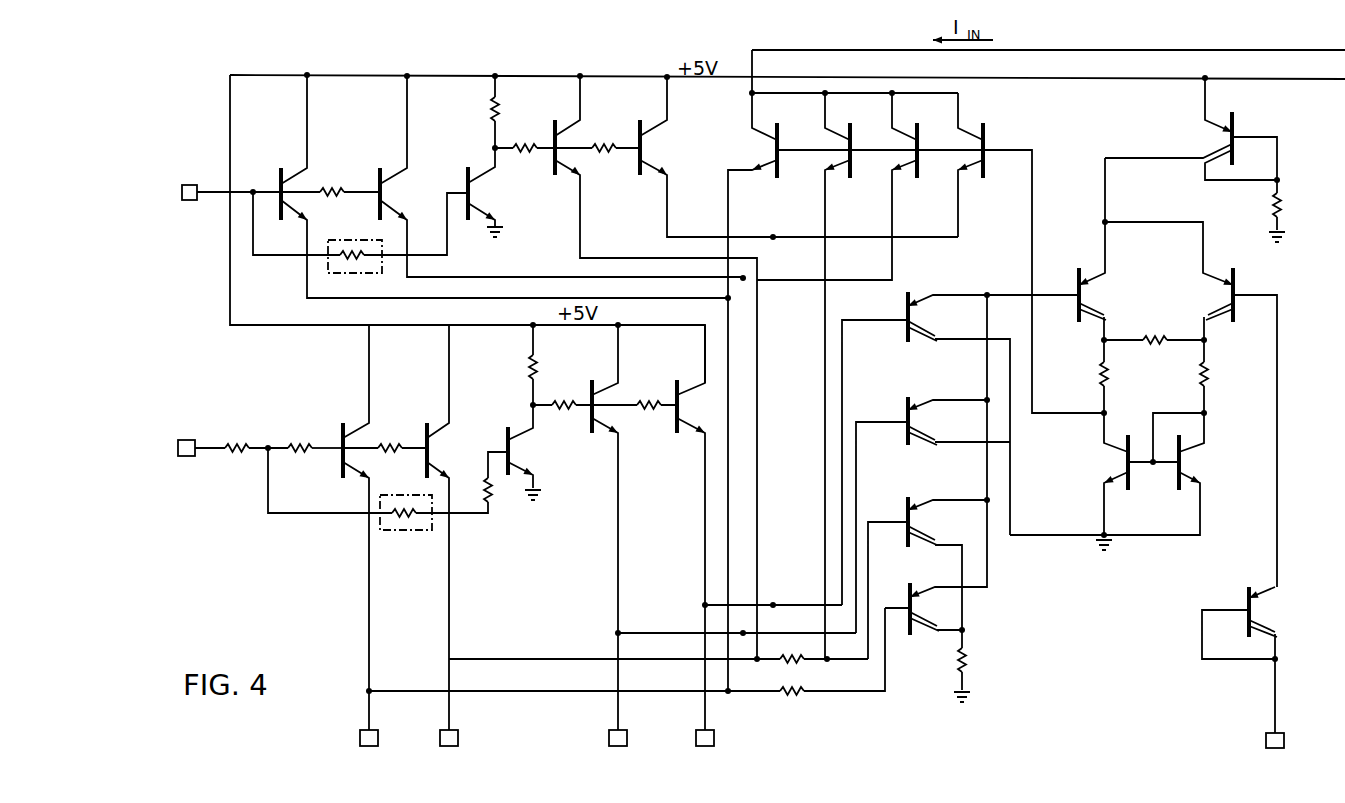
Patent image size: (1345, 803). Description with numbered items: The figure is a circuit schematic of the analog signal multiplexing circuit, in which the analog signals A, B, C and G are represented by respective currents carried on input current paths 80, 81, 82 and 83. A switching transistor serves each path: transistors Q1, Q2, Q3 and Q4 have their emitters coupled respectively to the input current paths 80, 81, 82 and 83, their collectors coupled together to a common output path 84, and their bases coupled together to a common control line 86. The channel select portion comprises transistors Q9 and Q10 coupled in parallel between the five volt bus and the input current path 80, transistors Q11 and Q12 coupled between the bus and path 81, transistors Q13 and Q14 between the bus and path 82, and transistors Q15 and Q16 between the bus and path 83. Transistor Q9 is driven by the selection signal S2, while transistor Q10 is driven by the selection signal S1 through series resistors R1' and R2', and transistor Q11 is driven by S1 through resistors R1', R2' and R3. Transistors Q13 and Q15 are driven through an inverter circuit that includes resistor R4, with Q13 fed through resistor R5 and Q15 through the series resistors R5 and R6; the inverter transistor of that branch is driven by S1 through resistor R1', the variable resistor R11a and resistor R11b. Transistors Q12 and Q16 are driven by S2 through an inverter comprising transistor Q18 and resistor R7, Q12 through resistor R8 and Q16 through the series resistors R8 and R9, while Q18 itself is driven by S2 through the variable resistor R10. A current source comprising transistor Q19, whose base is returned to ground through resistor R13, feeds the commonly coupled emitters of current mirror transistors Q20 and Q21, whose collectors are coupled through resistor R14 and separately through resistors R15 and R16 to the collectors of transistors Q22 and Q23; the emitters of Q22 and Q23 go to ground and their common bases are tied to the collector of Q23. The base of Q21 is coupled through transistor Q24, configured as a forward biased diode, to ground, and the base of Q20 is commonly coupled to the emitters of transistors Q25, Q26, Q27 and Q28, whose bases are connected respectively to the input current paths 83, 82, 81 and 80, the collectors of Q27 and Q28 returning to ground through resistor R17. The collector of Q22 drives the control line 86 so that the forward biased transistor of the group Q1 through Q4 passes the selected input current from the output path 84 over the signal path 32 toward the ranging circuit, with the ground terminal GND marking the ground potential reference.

The signal path 32 is at (1266, 50).
The input current path 80 is at (767, 690).
The input current path 81 is at (859, 658).
The input current path 82 is at (812, 632).
The input current path 83 is at (809, 600).
The common output path 84 is at (748, 91).
The common control line 86 is at (1018, 150).
The transistor Q1 is at (771, 132).
The transistor Q2 is at (843, 132).
The transistor Q3 is at (910, 132).
The transistor Q4 is at (976, 130).
The transistor Q9 is at (290, 168).
The transistor Q10 is at (352, 420).
The transistor Q11 is at (443, 418).
The transistor Q12 is at (573, 116).
The transistor Q13 is at (595, 378).
The transistor Q14 is at (397, 168).
The transistor Q15 is at (693, 380).
The transistor Q16 is at (658, 116).
The transistor Q18 is at (478, 164).
The transistor Q19 is at (1222, 116).
The transistor Q20 is at (1087, 268).
The transistor Q21 is at (1230, 268).
The transistor Q22 is at (1119, 439).
The transistor Q23 is at (1186, 486).
The transistor Q24 is at (1255, 586).
The transistor Q25 is at (920, 296).
The transistor Q26 is at (922, 398).
The transistor Q27 is at (924, 499).
The transistor Q28 is at (920, 596).
The resistor R1' is at (241, 435).
The resistor R2' is at (302, 435).
The resistor R3 is at (403, 441).
The resistor R4 is at (526, 366).
The resistor R5 is at (561, 398).
The resistor R6 is at (652, 396).
The resistor R7 is at (487, 112).
The resistor R8 is at (533, 141).
The resistor R9 is at (618, 141).
The variable resistor R10 is at (342, 238).
The variable resistor R11a is at (422, 495).
The resistor R11b is at (494, 508).
The resistor R13 is at (1266, 212).
The resistor R14 is at (1165, 334).
The resistor R15 is at (1099, 387).
The resistor R16 is at (1197, 387).
The resistor R17 is at (976, 666).
The selection signal S1 is at (173, 449).
The selection signal S2 is at (176, 193).
The analog signal A is at (369, 750).
The analog signal B is at (449, 750).
The analog signal C is at (618, 750).
The analog signal G is at (705, 750).
The ground potential GND is at (1269, 754).